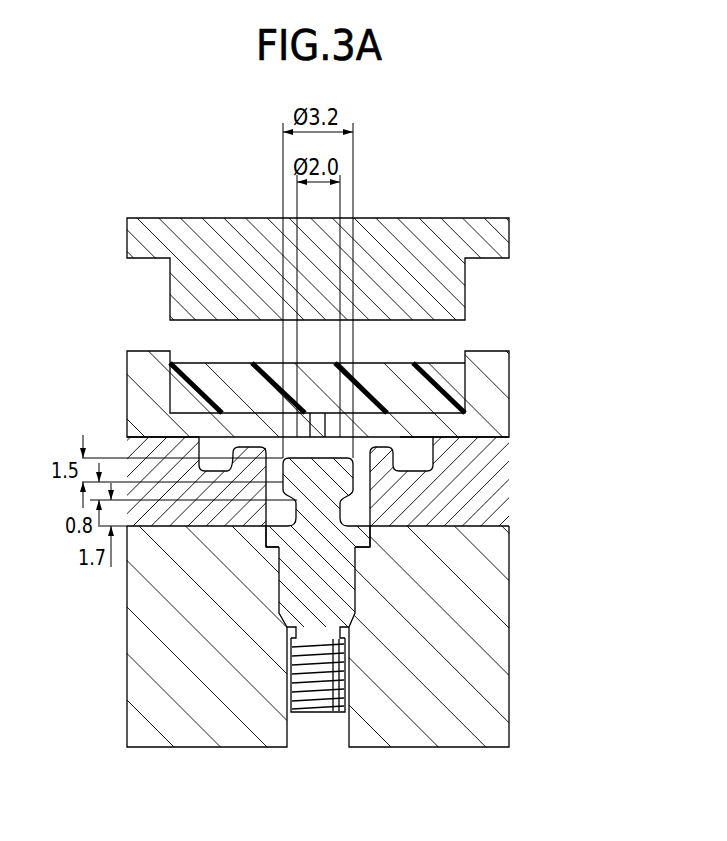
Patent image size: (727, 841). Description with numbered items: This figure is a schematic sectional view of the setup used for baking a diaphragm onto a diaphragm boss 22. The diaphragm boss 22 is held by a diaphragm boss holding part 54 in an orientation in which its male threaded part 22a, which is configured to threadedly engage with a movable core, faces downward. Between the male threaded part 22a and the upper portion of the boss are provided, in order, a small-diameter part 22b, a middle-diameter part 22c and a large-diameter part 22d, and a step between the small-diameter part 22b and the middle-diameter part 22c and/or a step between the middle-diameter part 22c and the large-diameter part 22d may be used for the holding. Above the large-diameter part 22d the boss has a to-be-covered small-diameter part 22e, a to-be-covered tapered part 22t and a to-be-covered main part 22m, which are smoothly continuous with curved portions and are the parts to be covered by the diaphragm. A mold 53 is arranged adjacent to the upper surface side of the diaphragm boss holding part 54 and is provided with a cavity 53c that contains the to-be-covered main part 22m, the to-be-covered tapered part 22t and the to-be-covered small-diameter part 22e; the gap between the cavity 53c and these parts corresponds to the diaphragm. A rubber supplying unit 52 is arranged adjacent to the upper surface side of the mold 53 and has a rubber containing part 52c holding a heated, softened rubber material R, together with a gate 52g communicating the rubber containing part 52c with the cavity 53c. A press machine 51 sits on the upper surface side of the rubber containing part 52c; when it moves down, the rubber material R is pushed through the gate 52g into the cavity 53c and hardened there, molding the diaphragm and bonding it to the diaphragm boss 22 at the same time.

The diaphragm boss 22 is at (330, 620).
The male threaded part 22a is at (316, 713).
The small-diameter part 22b is at (350, 632).
The middle-diameter part 22c is at (345, 593).
The large-diameter part 22d is at (367, 536).
The to-be-covered small-diameter part 22e is at (288, 512).
The to-be-covered main part 22m is at (322, 470).
The to-be-covered tapered part 22t is at (292, 498).
The press machine 51 is at (192, 218).
The rubber supplying unit 52 is at (510, 382).
The rubber containing part 52c is at (418, 430).
The gate 52g is at (318, 427).
The mold 53 is at (315, 438).
The cavity 53c is at (418, 467).
The diaphragm boss holding part 54 is at (148, 652).
The rubber material R is at (220, 378).